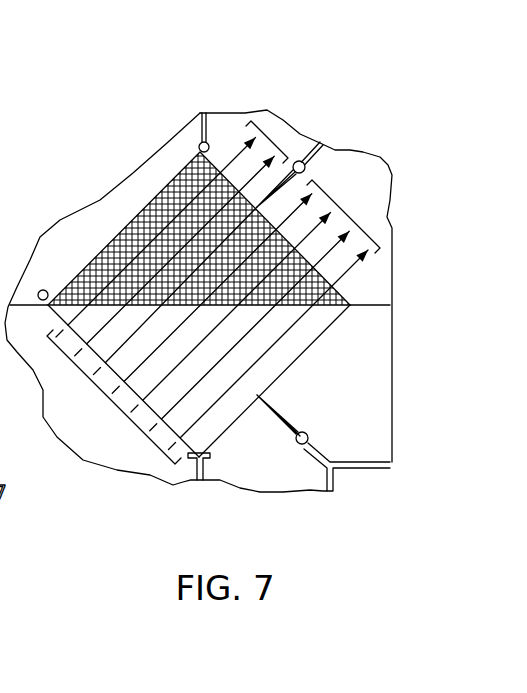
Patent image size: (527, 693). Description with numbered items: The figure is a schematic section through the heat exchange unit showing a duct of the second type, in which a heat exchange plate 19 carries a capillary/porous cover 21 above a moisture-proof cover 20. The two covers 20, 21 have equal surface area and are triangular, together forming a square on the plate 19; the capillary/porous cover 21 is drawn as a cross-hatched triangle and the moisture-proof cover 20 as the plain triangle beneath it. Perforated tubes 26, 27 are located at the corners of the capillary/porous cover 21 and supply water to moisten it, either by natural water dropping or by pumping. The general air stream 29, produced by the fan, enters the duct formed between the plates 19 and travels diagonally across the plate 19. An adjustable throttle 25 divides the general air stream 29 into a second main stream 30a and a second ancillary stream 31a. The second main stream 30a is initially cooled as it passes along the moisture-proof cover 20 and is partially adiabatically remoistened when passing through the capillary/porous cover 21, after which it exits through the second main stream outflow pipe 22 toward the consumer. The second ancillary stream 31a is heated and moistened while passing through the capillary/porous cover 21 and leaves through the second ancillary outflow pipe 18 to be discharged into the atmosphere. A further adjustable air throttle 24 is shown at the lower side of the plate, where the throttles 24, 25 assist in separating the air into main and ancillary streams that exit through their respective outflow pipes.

The second ancillary outflow pipe 18 is at (222, 137).
The heat exchange plate 19 is at (208, 418).
The moisture-proof cover 20 is at (265, 338).
The capillary/porous cover 21 is at (292, 300).
The second main stream outflow pipe 22 is at (374, 287).
The adjustable air throttle 24 is at (309, 444).
The adjustable throttle 25 is at (323, 143).
The perforated tube 26 is at (199, 147).
The perforated tube 27 is at (40, 291).
The general air stream 29 is at (113, 404).
The second main stream 30a is at (335, 205).
The second ancillary stream 31a is at (273, 131).